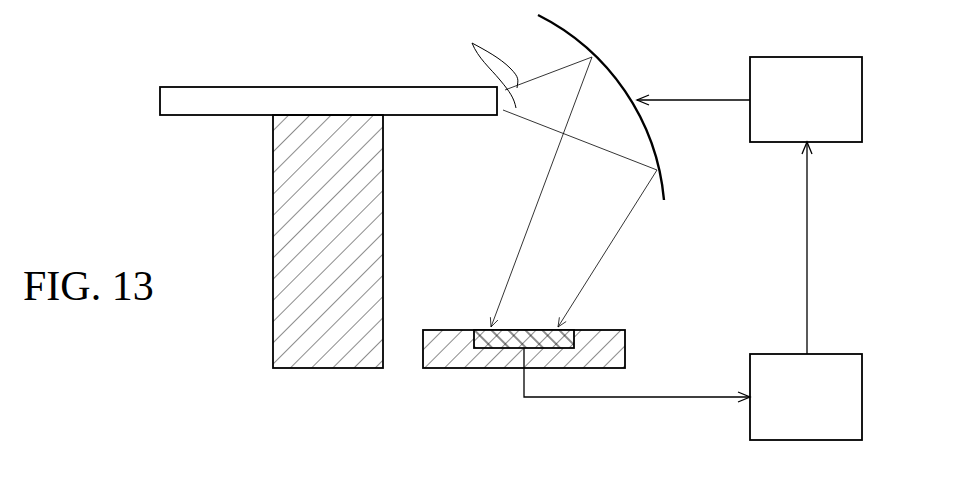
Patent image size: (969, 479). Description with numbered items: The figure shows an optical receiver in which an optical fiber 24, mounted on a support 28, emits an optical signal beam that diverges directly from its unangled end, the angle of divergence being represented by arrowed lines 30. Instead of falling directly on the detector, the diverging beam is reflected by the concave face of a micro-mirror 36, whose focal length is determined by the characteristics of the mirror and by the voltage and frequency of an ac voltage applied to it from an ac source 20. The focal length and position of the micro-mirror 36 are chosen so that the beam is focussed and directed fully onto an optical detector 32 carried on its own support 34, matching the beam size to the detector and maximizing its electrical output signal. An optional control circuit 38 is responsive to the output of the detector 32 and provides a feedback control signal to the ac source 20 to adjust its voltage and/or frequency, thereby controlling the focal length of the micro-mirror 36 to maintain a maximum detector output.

The ac source 20 is at (770, 135).
The optical fiber 24 is at (244, 98).
The support 28 is at (291, 181).
The arrowed lines 30 is at (479, 63).
The optical detector 32 is at (483, 336).
The support 34 is at (620, 340).
The micro-mirror 36 is at (617, 88).
The control circuit 38 is at (767, 360).